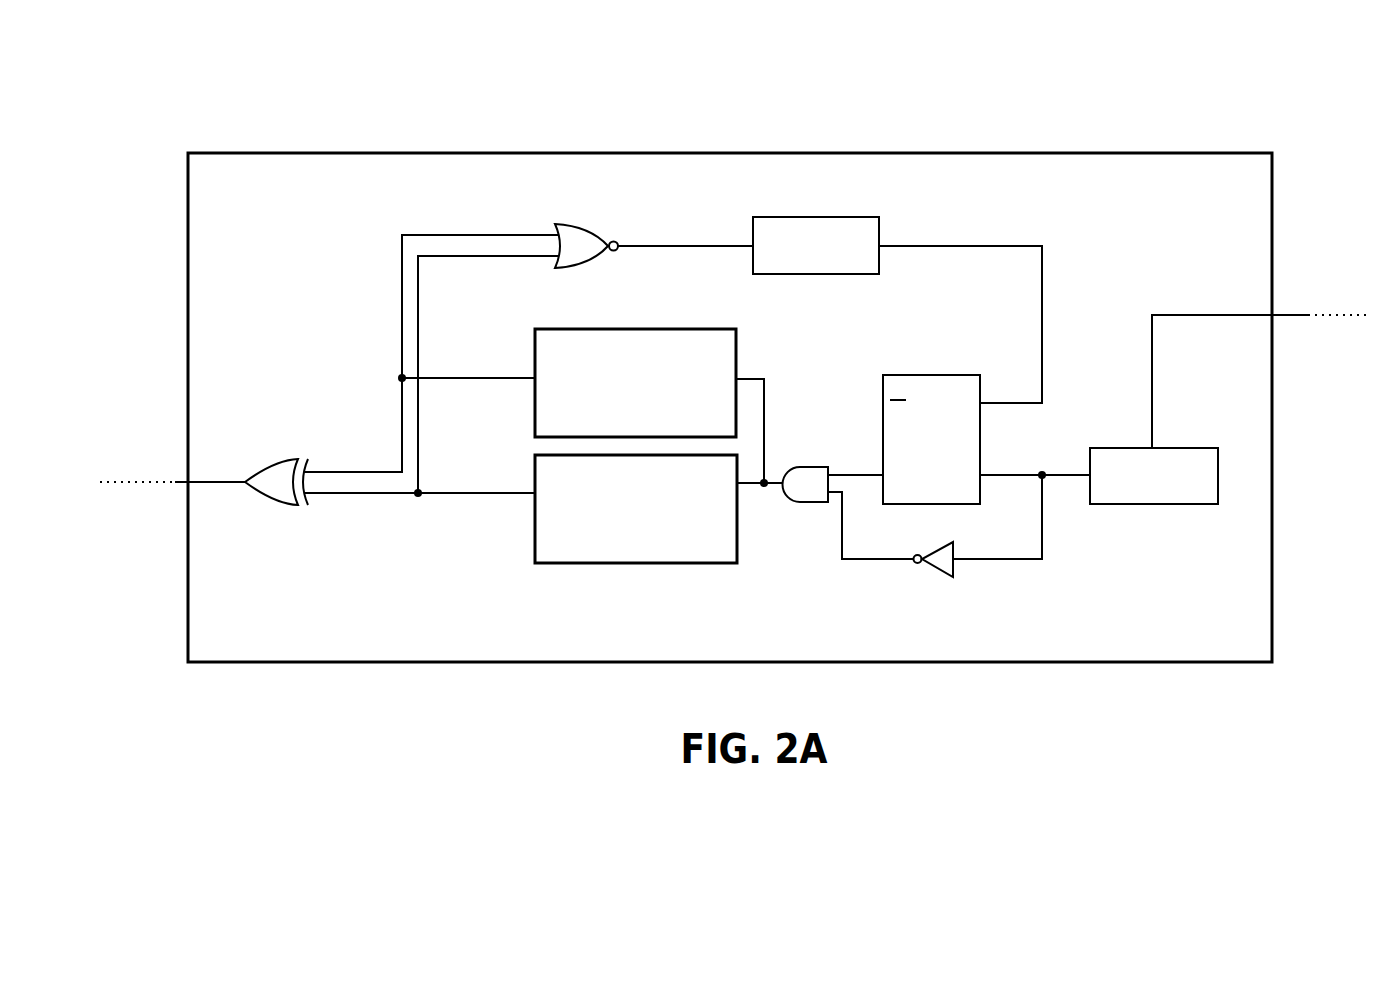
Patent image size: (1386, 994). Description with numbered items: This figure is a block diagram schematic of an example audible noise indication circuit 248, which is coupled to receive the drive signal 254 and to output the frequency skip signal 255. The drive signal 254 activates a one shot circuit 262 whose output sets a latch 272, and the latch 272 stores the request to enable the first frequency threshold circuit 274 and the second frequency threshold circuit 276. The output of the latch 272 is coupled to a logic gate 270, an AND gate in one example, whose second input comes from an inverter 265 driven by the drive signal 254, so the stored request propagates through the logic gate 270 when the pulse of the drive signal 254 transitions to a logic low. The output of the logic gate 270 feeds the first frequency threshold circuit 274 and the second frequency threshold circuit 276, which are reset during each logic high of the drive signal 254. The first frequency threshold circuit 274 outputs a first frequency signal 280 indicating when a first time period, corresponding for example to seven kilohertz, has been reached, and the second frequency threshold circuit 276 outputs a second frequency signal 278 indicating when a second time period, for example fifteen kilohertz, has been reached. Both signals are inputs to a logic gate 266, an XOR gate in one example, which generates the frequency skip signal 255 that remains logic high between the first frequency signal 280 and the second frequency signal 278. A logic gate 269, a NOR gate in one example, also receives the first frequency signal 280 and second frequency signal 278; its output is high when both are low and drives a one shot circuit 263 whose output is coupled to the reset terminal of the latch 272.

The audible noise indication circuit 248 is at (262, 150).
The drive signal 254 is at (1330, 293).
The frequency skip signal 255 is at (140, 460).
The one shot circuit 262 is at (1186, 506).
The one shot circuit 263 is at (817, 216).
The inverter 265 is at (935, 577).
The logic gate 266 is at (282, 460).
The logic gate 269 is at (585, 226).
The logic gate 270 is at (808, 466).
The latch 272 is at (920, 374).
The first frequency threshold circuit 274 is at (712, 328).
The second frequency threshold circuit 276 is at (536, 542).
The second frequency signal 278 is at (485, 468).
The first frequency signal 280 is at (478, 350).